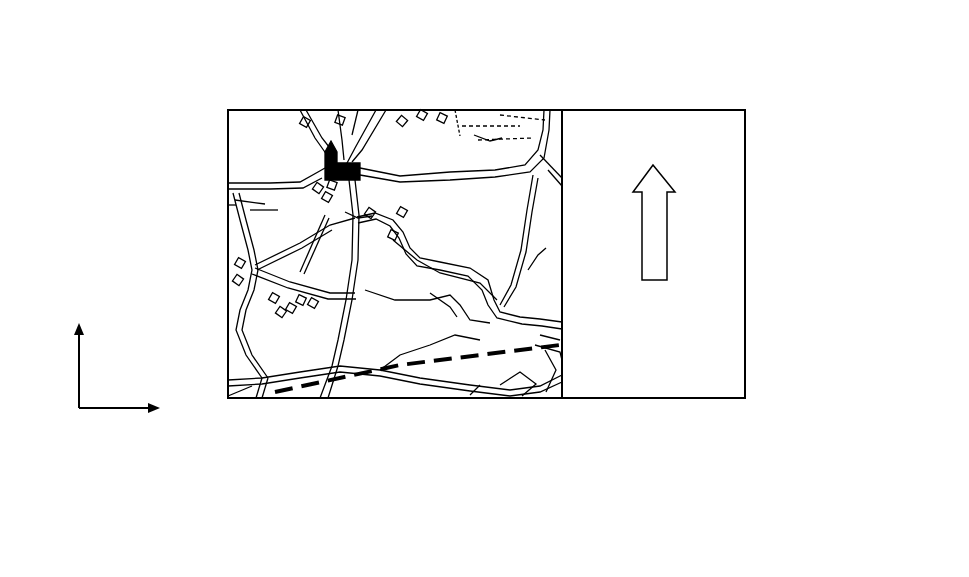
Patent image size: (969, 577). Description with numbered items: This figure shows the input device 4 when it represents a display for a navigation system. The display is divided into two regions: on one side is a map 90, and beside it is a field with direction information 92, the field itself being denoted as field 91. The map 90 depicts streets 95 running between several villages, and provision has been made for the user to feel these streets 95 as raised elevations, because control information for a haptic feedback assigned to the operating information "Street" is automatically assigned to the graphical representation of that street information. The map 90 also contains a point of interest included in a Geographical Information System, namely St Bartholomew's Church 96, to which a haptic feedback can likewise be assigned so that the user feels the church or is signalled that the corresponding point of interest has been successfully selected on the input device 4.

The input device 4 is at (803, 95).
The map 90 is at (268, 305).
The field with direction information 91 is at (693, 128).
The direction information 92 is at (645, 224).
The streets 95 is at (358, 218).
The St Bartholomew's Church 96 is at (326, 158).